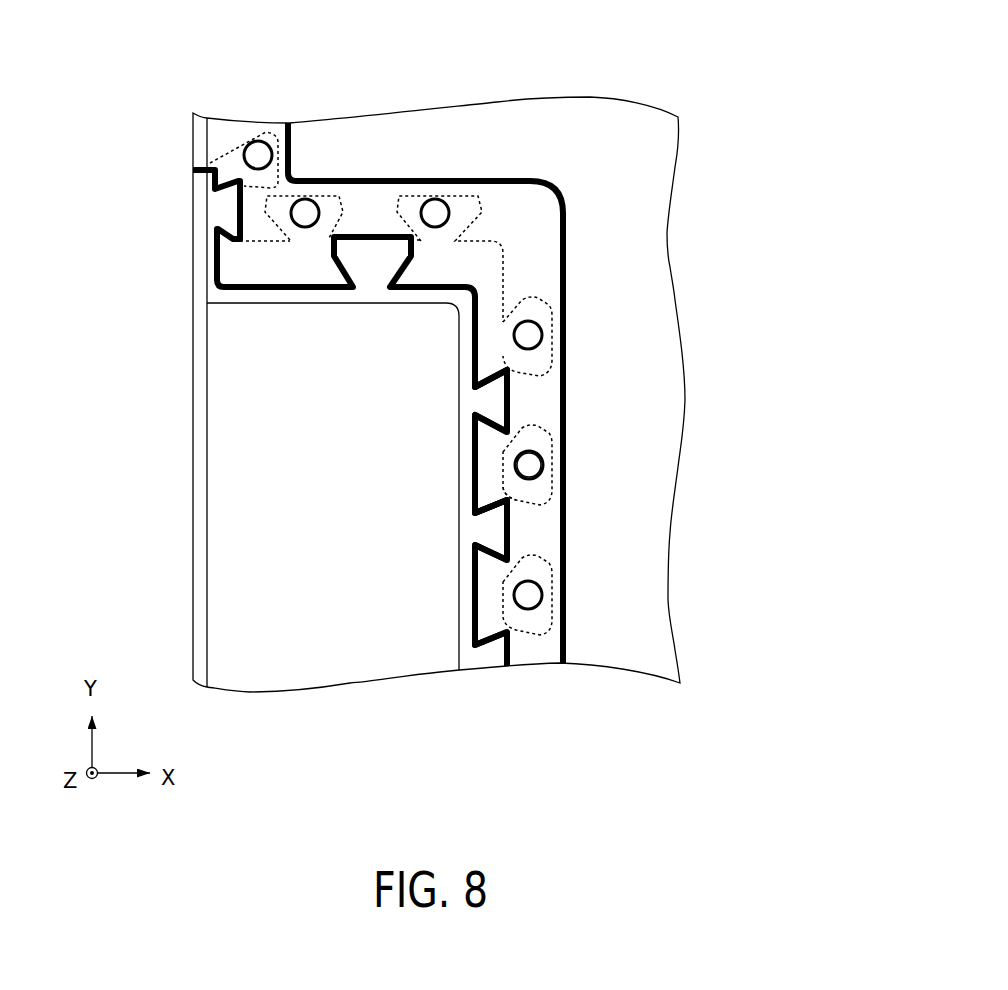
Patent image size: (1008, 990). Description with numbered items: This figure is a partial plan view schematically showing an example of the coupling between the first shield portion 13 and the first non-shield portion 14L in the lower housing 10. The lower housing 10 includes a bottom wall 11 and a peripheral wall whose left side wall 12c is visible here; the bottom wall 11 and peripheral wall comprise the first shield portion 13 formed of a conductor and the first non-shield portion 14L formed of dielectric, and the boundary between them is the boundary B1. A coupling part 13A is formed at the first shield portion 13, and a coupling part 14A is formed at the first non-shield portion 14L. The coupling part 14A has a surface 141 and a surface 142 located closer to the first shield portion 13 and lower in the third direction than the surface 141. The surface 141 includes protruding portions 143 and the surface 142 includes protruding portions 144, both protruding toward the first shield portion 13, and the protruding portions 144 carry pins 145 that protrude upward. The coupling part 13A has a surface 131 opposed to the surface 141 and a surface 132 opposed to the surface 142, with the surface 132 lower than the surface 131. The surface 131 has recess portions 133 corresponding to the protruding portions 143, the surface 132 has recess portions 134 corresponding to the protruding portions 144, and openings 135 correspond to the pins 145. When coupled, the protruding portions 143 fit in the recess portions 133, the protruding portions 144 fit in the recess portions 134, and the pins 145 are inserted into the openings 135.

The lower housing 10 is at (653, 70).
The bottom wall 11 is at (497, 125).
The first shield portion 13 is at (642, 272).
The coupling part 13A is at (552, 683).
The side wall 12c is at (188, 252).
The first non-shield portion 14L is at (217, 393).
The coupling part 14A is at (482, 684).
The surface 131 is at (482, 619).
The surface 132 is at (501, 249).
The recess portions 133 is at (516, 525).
The recess portions 134 is at (555, 448).
The openings 135 is at (552, 466).
The surface 141 is at (473, 592).
The surface 142 is at (497, 291).
The protruding portions 143 is at (493, 537).
The protruding portions 144 is at (509, 483).
The pins 145 is at (528, 466).
The boundary B1 is at (523, 754).